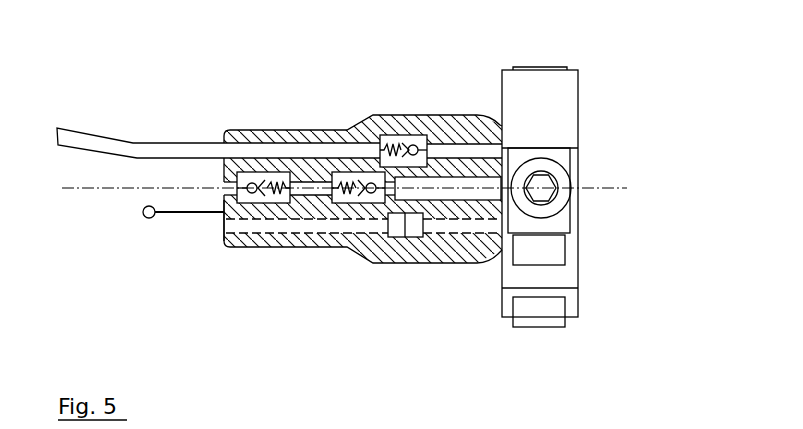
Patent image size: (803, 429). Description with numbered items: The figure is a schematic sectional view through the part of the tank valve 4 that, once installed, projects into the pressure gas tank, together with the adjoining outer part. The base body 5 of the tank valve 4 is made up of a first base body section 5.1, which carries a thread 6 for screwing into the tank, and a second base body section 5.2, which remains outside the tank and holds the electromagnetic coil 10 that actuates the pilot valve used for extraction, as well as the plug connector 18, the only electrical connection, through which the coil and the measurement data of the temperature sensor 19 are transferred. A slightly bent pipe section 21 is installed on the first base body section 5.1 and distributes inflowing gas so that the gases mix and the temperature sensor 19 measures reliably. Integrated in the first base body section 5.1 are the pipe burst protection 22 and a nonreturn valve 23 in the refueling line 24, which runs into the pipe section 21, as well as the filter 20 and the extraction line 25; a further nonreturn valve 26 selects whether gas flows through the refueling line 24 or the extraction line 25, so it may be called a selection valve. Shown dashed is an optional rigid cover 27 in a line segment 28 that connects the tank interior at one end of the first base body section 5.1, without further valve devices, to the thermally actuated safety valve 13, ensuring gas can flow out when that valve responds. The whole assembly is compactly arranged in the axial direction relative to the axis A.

The tank valve 4 is at (374, 182).
The base body 5 is at (592, 242).
The first base body section 5.1 is at (257, 133).
The second base body section 5.2 is at (563, 108).
The thread 6 is at (424, 122).
The electromagnetic coil 10 is at (562, 197).
The thermally actuated safety valve 13 is at (545, 307).
The plug connector 18 is at (528, 253).
The temperature sensor 19 is at (153, 219).
The filter 20 is at (477, 184).
The pipe section 21 is at (82, 138).
The pipe burst protection 22 is at (230, 249).
The nonreturn valve 23 is at (398, 136).
The refueling line 24 is at (325, 147).
The extraction line 25 is at (300, 245).
The further nonreturn valve 26 is at (341, 210).
The rigid cover 27 is at (399, 238).
The line segment 28 is at (278, 240).
The axis A is at (604, 187).